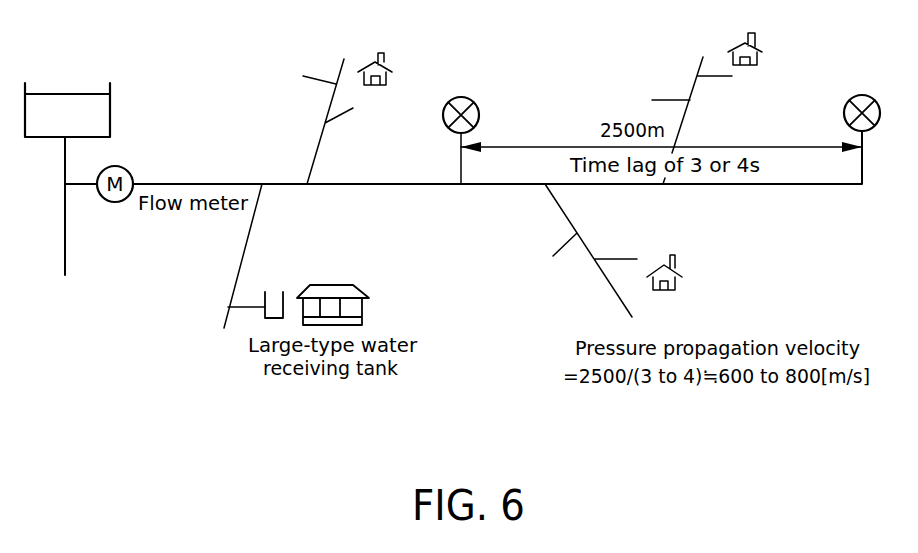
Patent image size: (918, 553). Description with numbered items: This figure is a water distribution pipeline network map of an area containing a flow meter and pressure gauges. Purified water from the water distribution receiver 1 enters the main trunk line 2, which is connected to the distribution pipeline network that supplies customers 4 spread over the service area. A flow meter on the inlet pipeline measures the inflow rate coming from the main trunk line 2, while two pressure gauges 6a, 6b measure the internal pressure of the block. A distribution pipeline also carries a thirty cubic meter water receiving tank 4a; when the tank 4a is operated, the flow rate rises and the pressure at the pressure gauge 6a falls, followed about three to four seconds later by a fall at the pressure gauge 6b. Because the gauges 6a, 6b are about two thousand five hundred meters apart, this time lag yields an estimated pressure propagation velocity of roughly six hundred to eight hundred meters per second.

The water distribution receiver 1 is at (112, 88).
The main trunk line 2 is at (65, 240).
The customers 4 is at (387, 57).
The water receiving tank 4a is at (273, 290).
The pressure gauge 6a is at (479, 112).
The pressure gauge 6b is at (842, 111).